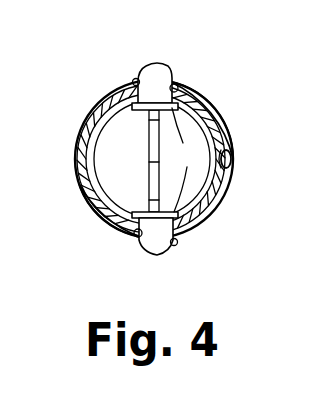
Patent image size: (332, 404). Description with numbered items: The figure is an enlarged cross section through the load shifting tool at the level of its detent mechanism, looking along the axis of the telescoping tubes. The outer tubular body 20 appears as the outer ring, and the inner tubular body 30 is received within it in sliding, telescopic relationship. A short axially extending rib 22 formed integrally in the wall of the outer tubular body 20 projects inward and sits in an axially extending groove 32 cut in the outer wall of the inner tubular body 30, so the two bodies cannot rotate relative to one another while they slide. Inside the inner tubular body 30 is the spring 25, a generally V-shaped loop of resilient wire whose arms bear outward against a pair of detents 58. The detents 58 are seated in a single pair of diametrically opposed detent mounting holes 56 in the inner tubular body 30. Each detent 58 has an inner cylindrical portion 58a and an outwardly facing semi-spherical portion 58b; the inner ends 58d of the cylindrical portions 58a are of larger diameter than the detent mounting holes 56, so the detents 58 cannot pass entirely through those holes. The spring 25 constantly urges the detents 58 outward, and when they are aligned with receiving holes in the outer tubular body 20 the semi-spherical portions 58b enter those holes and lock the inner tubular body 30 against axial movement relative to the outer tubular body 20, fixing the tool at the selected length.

The outer tubular body 20 is at (223, 203).
The rib 22 is at (232, 167).
The spring 25 is at (150, 152).
The inner tubular body 30 is at (82, 167).
The groove 32 is at (232, 158).
The detent mounting holes 56 is at (176, 81).
The detents 58 is at (155, 82).
The inner cylindrical portion 58a is at (145, 65).
The semi-spherical portion 58b is at (172, 68).
The inner ends 58d is at (188, 160).